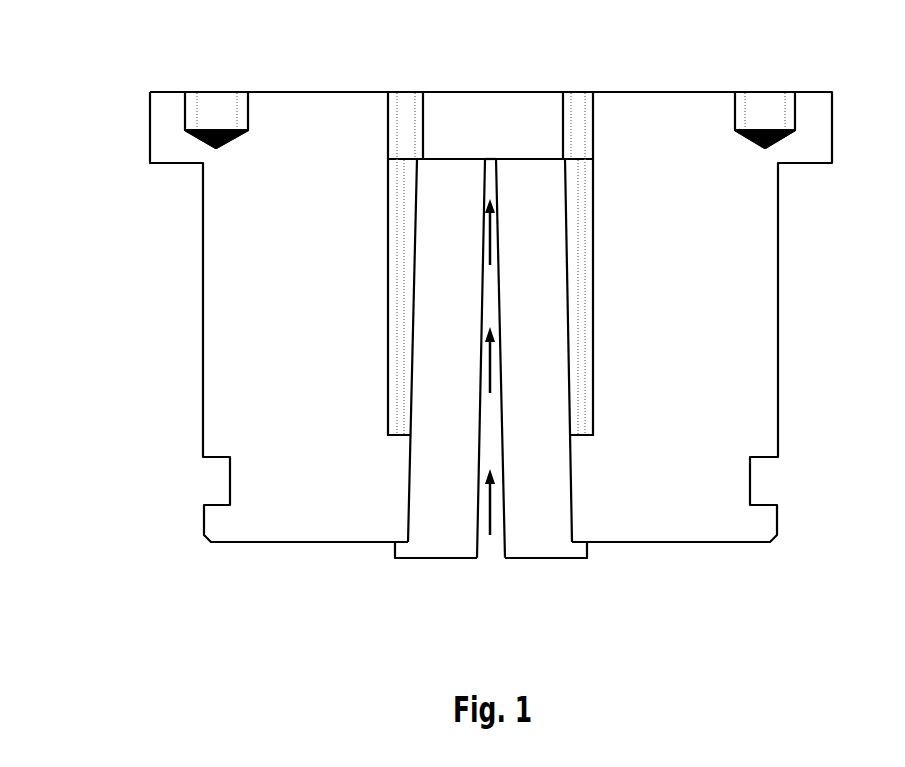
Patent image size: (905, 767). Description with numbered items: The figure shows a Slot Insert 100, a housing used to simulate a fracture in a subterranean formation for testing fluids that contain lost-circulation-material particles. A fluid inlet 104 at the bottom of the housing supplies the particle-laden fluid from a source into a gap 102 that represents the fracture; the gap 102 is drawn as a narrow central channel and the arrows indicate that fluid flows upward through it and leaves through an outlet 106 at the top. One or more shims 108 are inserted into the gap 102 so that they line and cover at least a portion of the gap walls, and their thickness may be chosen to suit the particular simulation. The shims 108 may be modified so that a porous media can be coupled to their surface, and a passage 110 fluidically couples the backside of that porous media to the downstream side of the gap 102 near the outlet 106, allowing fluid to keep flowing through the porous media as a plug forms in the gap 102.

The slot insert 100 is at (157, 217).
The gap 102 is at (487, 432).
The fluid inlet 104 is at (495, 553).
The outlet 106 is at (494, 166).
The shims 108 is at (435, 483).
The passage 110 is at (402, 208).